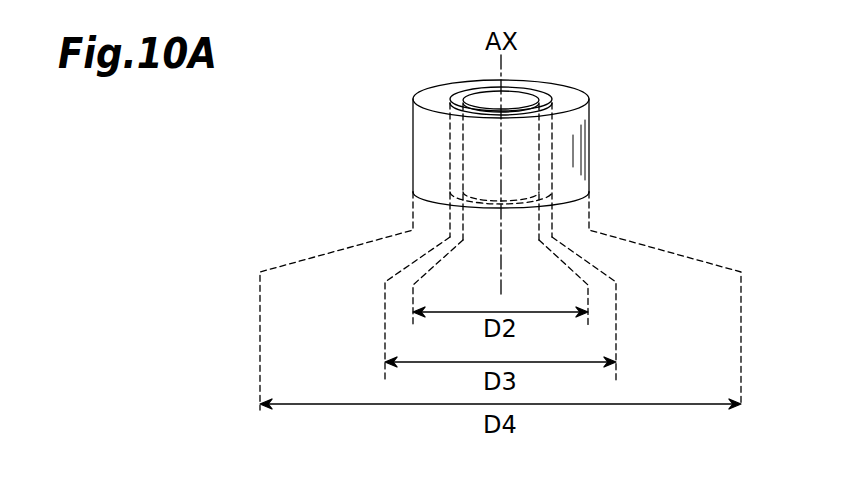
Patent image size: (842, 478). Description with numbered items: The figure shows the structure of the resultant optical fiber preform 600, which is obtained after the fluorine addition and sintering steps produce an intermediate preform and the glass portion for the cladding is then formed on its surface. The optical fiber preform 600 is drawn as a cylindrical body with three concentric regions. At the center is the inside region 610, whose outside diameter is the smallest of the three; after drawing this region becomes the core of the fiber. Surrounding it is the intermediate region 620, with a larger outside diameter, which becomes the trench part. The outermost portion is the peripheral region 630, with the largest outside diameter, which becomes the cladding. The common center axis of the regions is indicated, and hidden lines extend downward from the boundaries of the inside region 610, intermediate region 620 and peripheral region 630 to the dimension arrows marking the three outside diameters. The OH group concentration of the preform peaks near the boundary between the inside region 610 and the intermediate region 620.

The optical fiber preform 600 is at (600, 124).
The inside region 610 is at (523, 100).
The intermediate region 620 is at (455, 97).
The peripheral region 630 is at (570, 98).